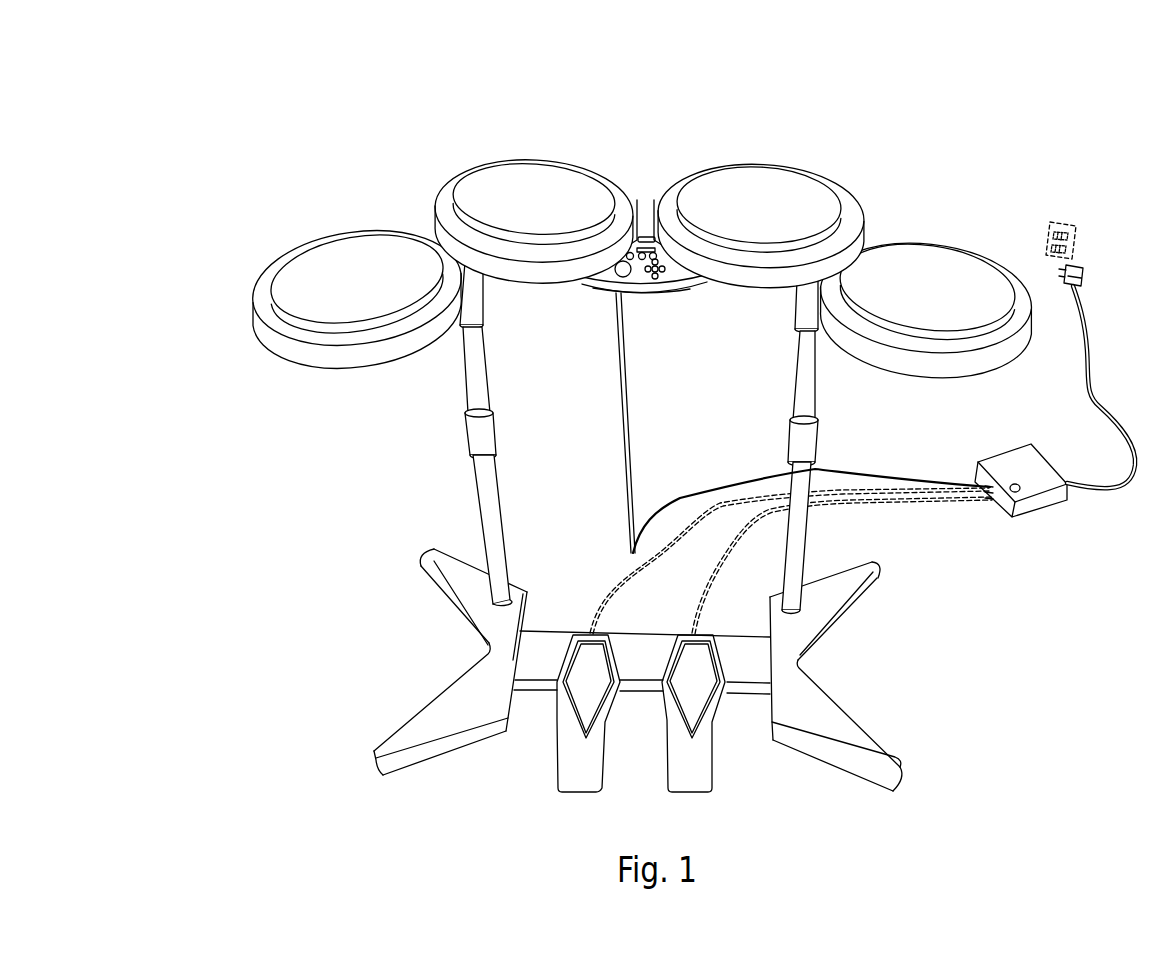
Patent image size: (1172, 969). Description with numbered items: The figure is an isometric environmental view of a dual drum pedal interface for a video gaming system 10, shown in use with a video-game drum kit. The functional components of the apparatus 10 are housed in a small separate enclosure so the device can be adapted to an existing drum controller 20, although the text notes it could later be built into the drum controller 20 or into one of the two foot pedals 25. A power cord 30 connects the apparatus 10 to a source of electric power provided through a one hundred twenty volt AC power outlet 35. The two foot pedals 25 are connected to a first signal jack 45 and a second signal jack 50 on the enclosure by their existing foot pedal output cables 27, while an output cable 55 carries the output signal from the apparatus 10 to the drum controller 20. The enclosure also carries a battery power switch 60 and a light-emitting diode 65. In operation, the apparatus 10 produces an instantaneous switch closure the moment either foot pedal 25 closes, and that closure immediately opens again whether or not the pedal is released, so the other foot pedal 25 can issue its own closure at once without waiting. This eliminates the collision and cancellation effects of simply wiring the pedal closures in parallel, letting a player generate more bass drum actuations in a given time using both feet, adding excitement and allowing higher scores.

The dual drum pedal interface for a video gaming system 10 is at (645, 438).
The drum controller 20 is at (733, 193).
The foot pedal 25 is at (578, 772).
The foot pedal output cable 27 is at (722, 560).
The power cord (P1) 30 is at (1088, 363).
The 120 VAC power outlet 35 is at (1075, 226).
The first signal jack (J1) 45 is at (1001, 497).
The second signal jack (J2) 50 is at (995, 497).
The output cable (P3) 55 is at (612, 312).
The battery power switch (S1) 60 is at (1017, 493).
The light-emitting diode (LED) (D4) 65 is at (995, 467).